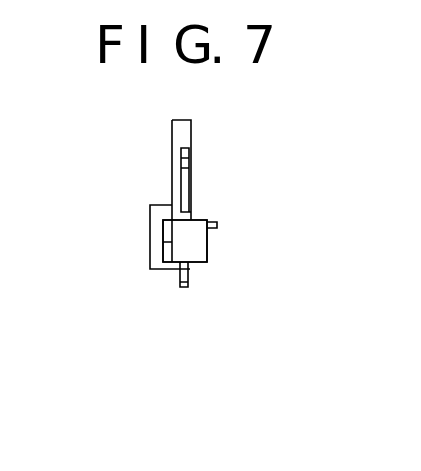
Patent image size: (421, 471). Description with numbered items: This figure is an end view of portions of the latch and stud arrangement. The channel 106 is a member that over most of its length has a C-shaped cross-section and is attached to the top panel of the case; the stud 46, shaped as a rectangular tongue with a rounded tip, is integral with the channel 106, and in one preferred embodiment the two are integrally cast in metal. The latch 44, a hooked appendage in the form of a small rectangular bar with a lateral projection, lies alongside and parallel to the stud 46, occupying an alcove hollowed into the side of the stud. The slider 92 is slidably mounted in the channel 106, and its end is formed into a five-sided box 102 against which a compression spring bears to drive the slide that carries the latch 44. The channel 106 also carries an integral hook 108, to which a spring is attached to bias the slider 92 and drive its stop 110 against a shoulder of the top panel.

The stud 46 is at (173, 131).
The latch 44 is at (190, 167).
The channel 106 is at (150, 243).
The five-sided box 102 is at (190, 248).
The slider 92 is at (208, 248).
The stop 110 is at (218, 226).
The hook 108 is at (208, 318).